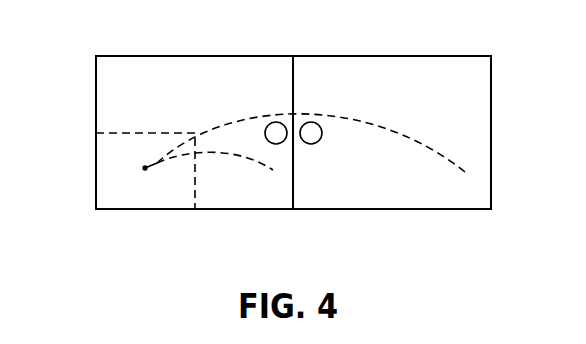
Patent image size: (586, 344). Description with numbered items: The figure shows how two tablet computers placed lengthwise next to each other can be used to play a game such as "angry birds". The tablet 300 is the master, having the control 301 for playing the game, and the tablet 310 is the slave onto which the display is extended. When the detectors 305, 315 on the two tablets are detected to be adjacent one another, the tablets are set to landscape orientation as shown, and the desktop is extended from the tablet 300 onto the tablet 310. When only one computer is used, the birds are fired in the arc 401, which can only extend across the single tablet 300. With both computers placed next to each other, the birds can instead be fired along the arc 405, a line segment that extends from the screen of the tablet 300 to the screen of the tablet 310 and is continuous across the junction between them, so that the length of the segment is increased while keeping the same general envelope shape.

The tablet 300 is at (122, 56).
The tablet 310 is at (463, 56).
The control 301 is at (115, 132).
The detector 305 is at (275, 122).
The detector 315 is at (311, 122).
The arc 405 is at (207, 131).
The arc 401 is at (255, 163).